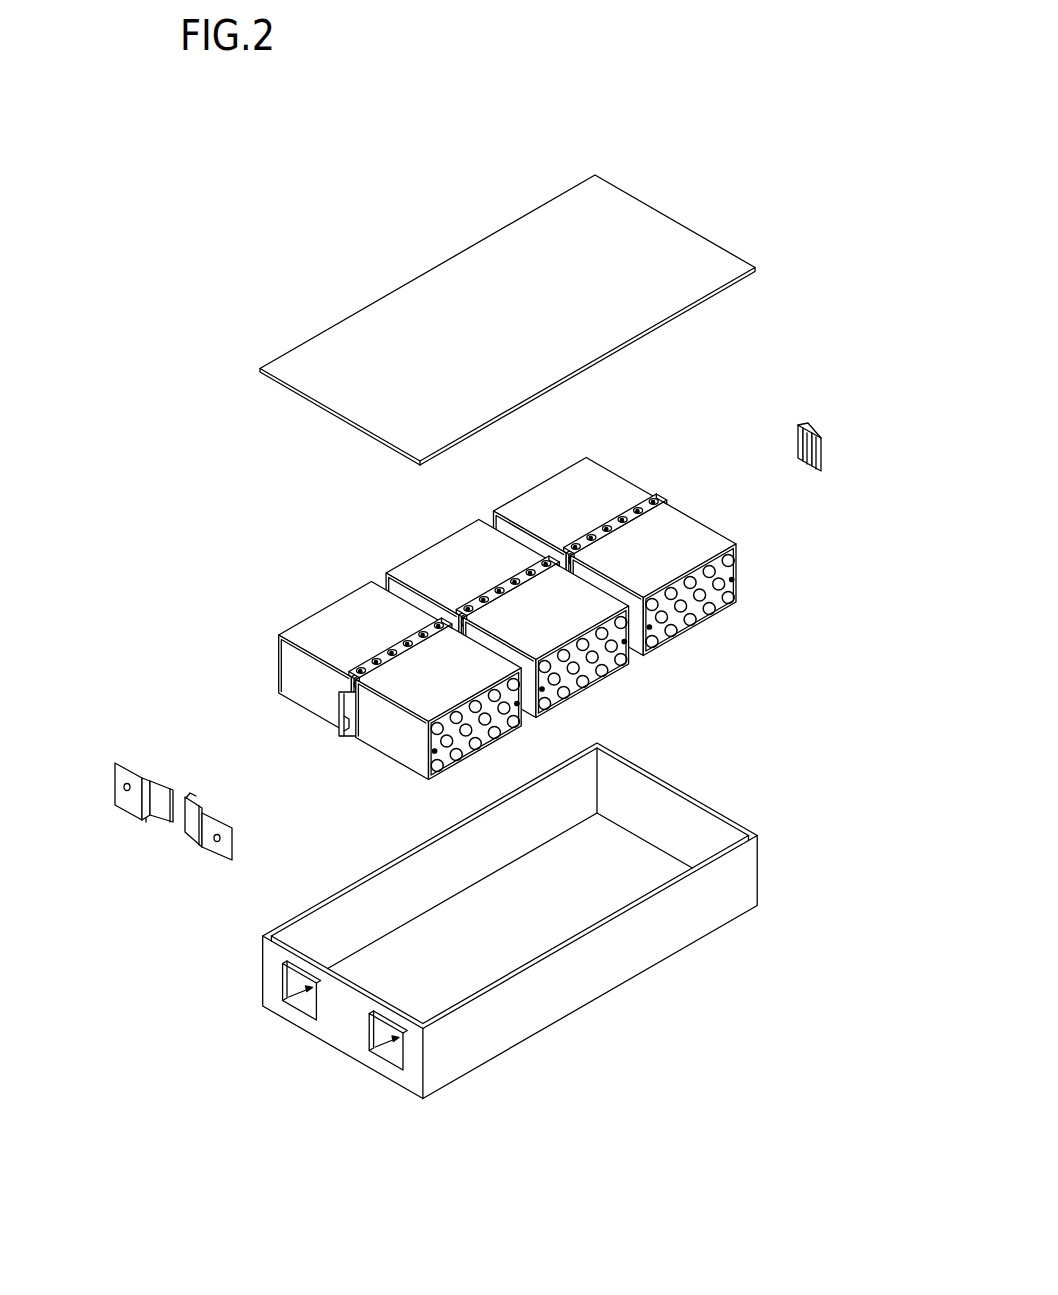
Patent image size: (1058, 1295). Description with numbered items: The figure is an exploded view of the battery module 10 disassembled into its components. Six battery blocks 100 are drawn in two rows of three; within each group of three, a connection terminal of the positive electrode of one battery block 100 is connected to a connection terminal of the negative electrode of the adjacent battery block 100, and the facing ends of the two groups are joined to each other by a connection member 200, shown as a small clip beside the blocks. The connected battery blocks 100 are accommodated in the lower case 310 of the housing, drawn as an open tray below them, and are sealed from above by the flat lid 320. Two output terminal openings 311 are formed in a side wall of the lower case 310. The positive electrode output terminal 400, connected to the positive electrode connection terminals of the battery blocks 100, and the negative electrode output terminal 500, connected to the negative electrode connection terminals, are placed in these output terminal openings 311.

The battery module 10 is at (355, 167).
The battery block 100 is at (707, 613).
The connection member 200 is at (810, 423).
The lower case 310 is at (486, 938).
The output terminal opening 311 is at (288, 995).
The lid 320 is at (695, 230).
The positive electrode output terminal 400 is at (127, 797).
The negative electrode output terminal 500 is at (212, 847).